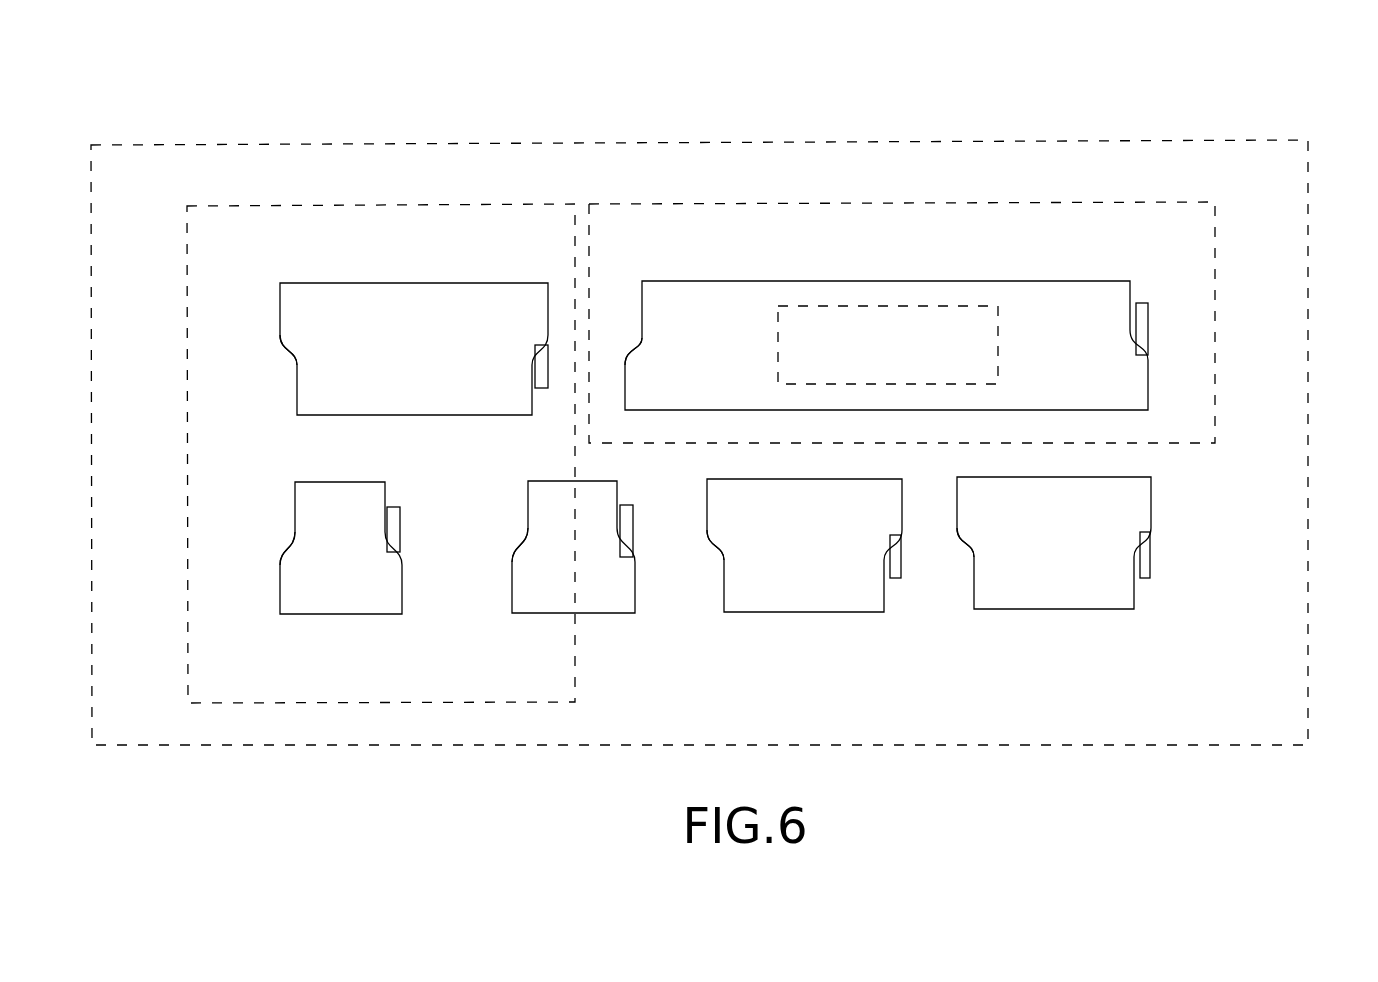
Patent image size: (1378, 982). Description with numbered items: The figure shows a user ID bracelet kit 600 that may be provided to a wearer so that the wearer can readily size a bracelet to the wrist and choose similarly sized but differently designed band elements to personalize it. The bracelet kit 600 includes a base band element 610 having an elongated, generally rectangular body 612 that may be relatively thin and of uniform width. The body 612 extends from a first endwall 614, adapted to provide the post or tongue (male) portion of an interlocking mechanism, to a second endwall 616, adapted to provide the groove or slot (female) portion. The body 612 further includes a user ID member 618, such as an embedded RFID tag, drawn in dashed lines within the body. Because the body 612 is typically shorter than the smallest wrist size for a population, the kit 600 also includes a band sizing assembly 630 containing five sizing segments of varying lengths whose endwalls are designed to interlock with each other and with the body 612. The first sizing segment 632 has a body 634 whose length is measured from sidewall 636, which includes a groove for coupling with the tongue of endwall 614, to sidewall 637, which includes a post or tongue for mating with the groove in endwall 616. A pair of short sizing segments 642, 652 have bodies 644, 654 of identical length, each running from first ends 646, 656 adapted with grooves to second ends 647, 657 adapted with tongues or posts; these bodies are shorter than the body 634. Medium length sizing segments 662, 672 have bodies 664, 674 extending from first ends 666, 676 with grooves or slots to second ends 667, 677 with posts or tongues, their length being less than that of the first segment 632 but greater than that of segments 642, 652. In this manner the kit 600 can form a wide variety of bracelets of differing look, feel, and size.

The bracelet kit 600 is at (1247, 139).
The base band element 610 is at (1215, 222).
The body 612 is at (1052, 322).
The first endwall 614 is at (1133, 302).
The second endwall 616 is at (636, 287).
The user ID member 618 is at (933, 303).
The band sizing assembly 630 is at (187, 288).
The first sizing segment 632 is at (469, 447).
The body 634 is at (390, 367).
The sidewall 636 is at (297, 380).
The sidewall 637 is at (548, 292).
The sizing segment 642 is at (345, 645).
The body 644 is at (316, 573).
The first end 646 is at (280, 562).
The second end 647 is at (402, 560).
The sizing segment 652 is at (570, 643).
The body 654 is at (553, 572).
The first end 656 is at (512, 565).
The second end 657 is at (635, 558).
The sizing segment 662 is at (802, 642).
The body 664 is at (781, 570).
The first end 666 is at (724, 585).
The second end 667 is at (902, 535).
The sizing segment 672 is at (1057, 639).
The body 674 is at (1033, 570).
The first end 676 is at (974, 598).
The second end 677 is at (1152, 530).